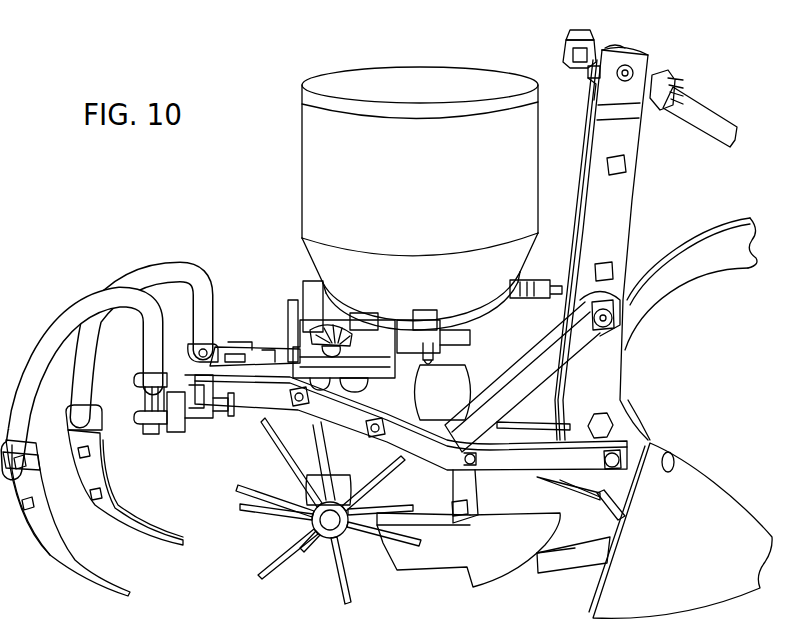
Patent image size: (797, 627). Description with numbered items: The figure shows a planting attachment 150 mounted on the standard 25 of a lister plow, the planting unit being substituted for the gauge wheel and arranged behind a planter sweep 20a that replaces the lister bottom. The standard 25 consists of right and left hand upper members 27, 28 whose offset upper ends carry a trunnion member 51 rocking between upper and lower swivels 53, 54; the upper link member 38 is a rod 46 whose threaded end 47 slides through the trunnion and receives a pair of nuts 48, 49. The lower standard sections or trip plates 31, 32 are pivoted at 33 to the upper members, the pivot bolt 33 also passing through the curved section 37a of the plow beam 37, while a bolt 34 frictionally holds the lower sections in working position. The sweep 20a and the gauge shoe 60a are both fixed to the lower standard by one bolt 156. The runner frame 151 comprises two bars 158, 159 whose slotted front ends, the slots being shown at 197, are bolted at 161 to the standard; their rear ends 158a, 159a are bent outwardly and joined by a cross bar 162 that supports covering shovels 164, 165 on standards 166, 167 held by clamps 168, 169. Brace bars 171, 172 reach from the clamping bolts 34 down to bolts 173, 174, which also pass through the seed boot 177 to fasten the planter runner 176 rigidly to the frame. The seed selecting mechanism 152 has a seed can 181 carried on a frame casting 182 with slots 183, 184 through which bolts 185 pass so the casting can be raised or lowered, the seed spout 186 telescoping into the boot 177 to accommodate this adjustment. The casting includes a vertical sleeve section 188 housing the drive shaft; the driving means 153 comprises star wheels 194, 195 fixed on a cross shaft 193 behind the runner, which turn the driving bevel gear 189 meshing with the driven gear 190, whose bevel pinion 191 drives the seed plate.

The planter sweep 20a is at (728, 498).
The standard 25 is at (641, 358).
The right hand standard member 27 is at (622, 186).
The left hand standard member 28 is at (577, 212).
The right hand lower standard section 31 is at (627, 432).
The left hand lower standard section 32 is at (570, 400).
The pivot bolt 33 is at (612, 428).
The bolt 34 is at (627, 335).
The plow beam 37 is at (694, 217).
The curved section of plow beam 37a is at (690, 275).
The upper link member 38 is at (733, 104).
The rod 46 is at (700, 112).
The threaded end of rod 47 is at (565, 36).
The nut 48 is at (572, 56).
The nut 49 is at (666, 76).
The trunnion member 51 is at (588, 72).
The upper swivel 53 is at (613, 47).
The lower swivel 54 is at (590, 86).
The gauge shoe 60a is at (580, 566).
The planting attachment 150 is at (249, 229).
The runner frame 151 is at (251, 424).
The seed selecting mechanism 152 is at (409, 296).
The driving means 153 is at (267, 536).
The bolt 156 is at (673, 457).
The frame bar 158 is at (540, 434).
The bent end of frame bar 158a is at (226, 343).
The frame bar 159 is at (530, 470).
The bent end of frame bar 159a is at (195, 423).
The bolt 161 is at (622, 508).
The cross bar 162 is at (192, 345).
The covering shovel 164 is at (108, 487).
The covering shovel 165 is at (72, 568).
The shovel standard 166 is at (162, 277).
The shovel standard 167 is at (55, 338).
The clamp 168 is at (240, 345).
The clamp 169 is at (150, 378).
The brace bar 171 is at (540, 375).
The brace bar 172 is at (575, 345).
The bolt 173 is at (481, 523).
The bolt 174 is at (476, 459).
The planter runner 176 is at (428, 585).
The seed boot 177 is at (410, 491).
The seed can 181 is at (318, 146).
The frame casting 182 is at (297, 436).
The slot 183 is at (295, 360).
The slot 184 is at (395, 374).
The bolt 185 is at (304, 406).
The seed spout 186 is at (445, 365).
The sleeve section 188 is at (322, 460).
The driving bevel gear 189 is at (331, 325).
The driven gear 190 is at (298, 318).
The bevel pinion 191 is at (355, 312).
The cross shaft 193 is at (327, 534).
The driving star wheel 194 is at (300, 500).
The driving star wheel 195 is at (309, 554).
The slot 197 is at (620, 466).